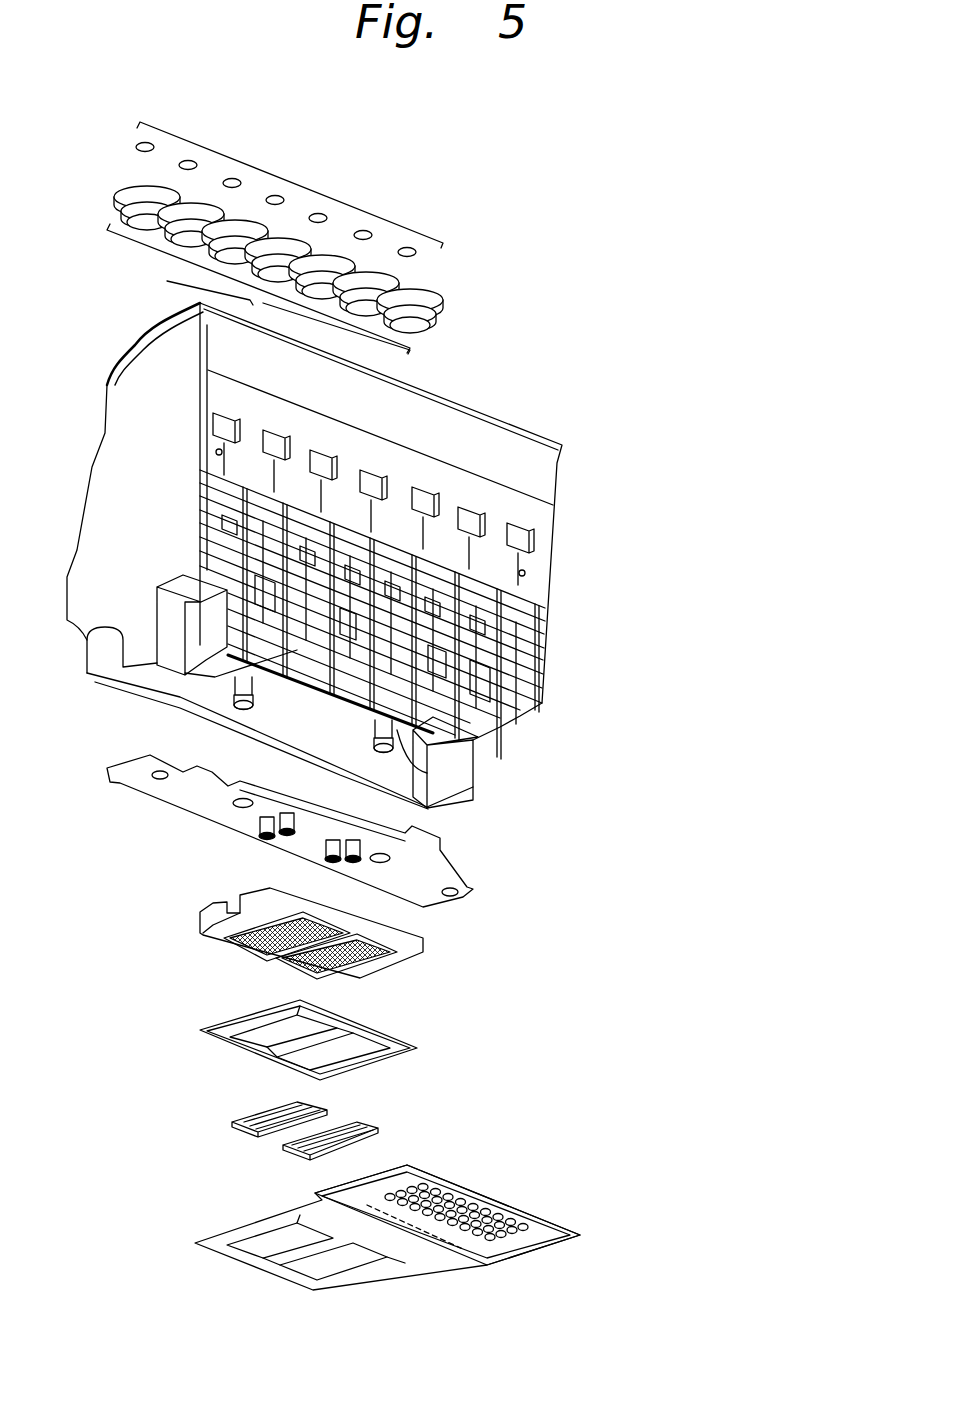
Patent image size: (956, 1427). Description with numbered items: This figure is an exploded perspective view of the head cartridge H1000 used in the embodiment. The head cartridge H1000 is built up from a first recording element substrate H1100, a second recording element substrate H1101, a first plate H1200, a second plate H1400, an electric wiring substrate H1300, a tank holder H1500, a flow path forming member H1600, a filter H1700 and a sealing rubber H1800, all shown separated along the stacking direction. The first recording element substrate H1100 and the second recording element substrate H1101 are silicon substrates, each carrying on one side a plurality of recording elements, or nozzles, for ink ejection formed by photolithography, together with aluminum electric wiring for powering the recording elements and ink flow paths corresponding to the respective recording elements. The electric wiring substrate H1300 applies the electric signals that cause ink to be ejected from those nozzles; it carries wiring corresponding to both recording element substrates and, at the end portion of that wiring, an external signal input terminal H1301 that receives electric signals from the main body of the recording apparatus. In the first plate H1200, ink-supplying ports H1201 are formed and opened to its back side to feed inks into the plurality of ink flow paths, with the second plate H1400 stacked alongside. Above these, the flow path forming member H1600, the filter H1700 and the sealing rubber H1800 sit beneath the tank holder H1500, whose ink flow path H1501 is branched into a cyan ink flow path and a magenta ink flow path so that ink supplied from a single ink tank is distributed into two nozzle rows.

The head cartridge H1000 is at (546, 412).
The first recording element substrate H1100 is at (372, 1122).
The second recording element substrate H1101 is at (242, 1128).
The first plate H1200 is at (293, 948).
The ink-supplying ports H1201 is at (347, 967).
The electric wiring substrate H1300 is at (392, 1229).
The external signal input terminal H1301 is at (517, 1250).
The second plate H1400 is at (263, 1053).
The tank holder H1500 is at (537, 640).
The ink flow path H1501 is at (480, 797).
The flow path forming member H1600 is at (173, 795).
The filter H1700 is at (296, 182).
The sealing rubber H1800 is at (167, 281).